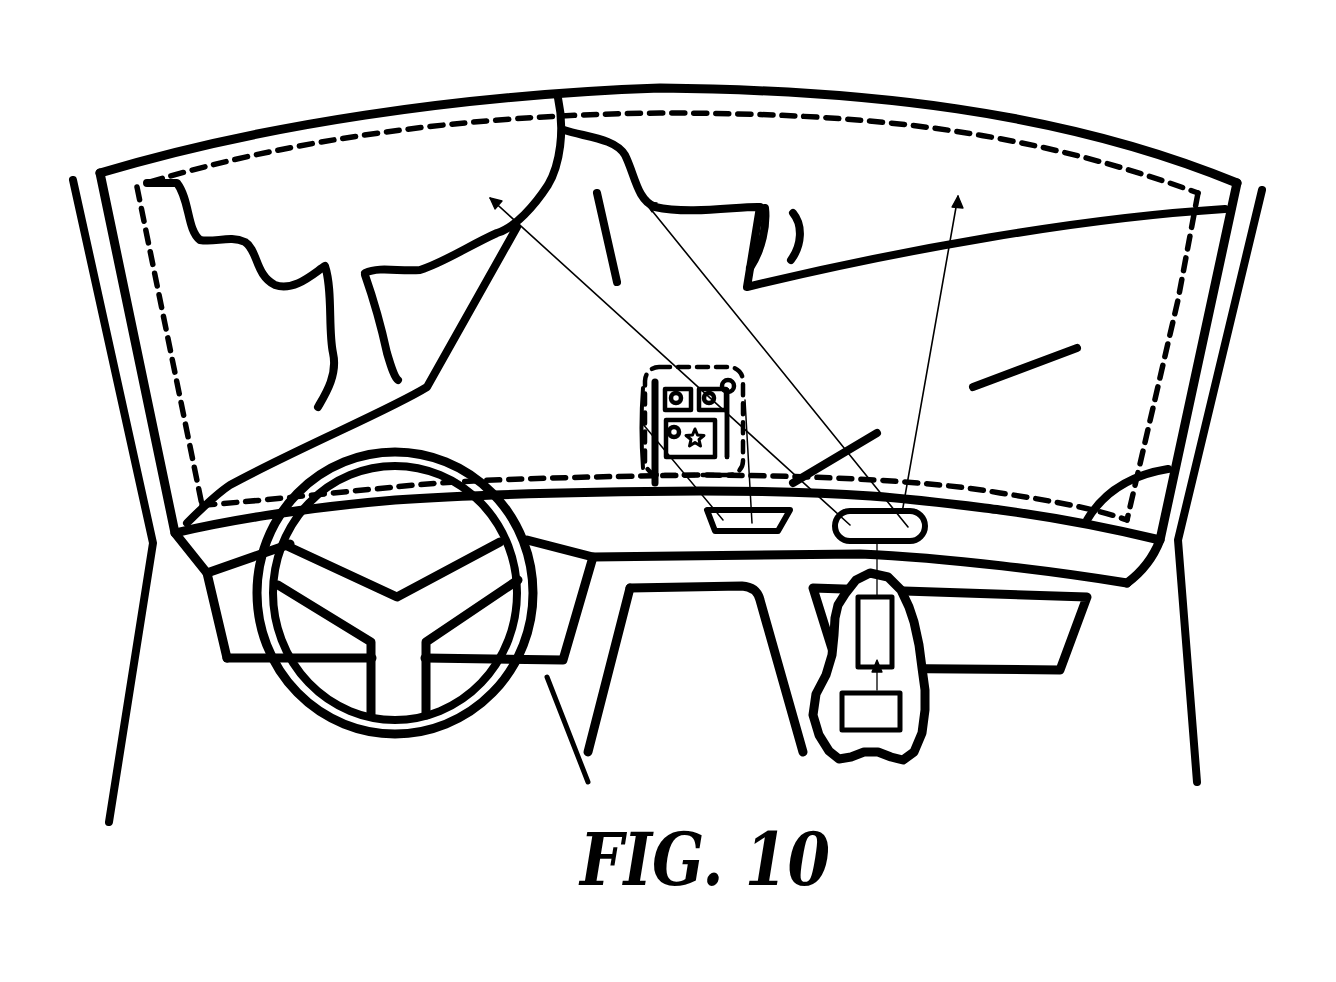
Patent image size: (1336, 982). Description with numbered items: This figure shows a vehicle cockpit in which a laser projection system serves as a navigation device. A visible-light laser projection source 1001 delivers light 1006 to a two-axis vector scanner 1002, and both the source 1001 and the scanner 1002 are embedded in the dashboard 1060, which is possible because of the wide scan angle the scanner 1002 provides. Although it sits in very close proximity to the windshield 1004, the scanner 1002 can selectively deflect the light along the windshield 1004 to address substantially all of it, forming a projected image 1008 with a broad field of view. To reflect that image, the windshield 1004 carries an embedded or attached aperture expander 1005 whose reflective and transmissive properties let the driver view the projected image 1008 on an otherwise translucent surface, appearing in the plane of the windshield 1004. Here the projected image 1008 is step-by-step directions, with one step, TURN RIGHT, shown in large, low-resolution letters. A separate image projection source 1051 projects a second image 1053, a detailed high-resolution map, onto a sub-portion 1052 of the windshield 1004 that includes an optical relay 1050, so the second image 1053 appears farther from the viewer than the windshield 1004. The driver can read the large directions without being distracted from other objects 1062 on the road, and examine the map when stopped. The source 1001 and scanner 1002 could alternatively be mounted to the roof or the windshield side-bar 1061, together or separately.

The visible-light laser projection source 1001 is at (888, 707).
The two-axis vector scanner 1002 is at (875, 639).
The windshield 1004 is at (1080, 120).
The aperture expander 1005 is at (277, 147).
The light 1006 is at (843, 686).
The projected image 1008 is at (679, 143).
The optical relay 1050 is at (642, 442).
The image projection source 1051 is at (717, 529).
The sub-portion of the windshield 1052 is at (626, 418).
The second image 1053 is at (730, 423).
The dashboard 1060 is at (1000, 533).
The windshield side-bar 1061 is at (1202, 402).
The other objects 1062 is at (353, 360).